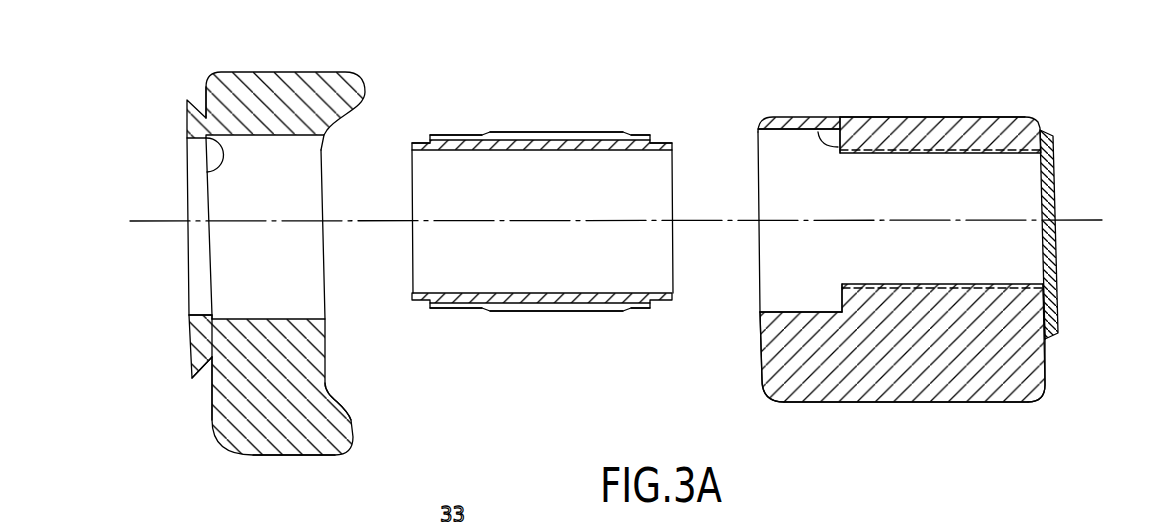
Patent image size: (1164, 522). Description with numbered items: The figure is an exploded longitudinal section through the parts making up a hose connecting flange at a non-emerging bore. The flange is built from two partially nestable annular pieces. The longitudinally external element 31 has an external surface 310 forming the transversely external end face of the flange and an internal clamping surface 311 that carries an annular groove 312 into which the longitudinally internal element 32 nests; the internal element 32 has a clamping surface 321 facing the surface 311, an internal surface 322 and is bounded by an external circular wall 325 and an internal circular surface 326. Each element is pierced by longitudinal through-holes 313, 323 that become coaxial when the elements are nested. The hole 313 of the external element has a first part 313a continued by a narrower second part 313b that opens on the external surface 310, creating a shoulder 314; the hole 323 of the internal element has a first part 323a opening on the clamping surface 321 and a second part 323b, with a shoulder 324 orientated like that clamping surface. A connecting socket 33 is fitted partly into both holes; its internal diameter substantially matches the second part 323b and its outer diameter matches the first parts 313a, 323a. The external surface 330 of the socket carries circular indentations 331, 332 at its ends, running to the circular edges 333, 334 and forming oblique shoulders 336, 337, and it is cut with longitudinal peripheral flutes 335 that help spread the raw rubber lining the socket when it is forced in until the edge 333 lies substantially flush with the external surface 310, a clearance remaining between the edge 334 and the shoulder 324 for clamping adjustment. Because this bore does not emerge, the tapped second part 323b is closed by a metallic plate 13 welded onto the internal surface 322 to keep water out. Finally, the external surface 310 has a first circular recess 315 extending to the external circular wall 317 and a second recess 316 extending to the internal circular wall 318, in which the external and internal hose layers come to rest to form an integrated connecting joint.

The longitudinally external element 31 is at (255, 265).
The external surface 310 is at (192, 338).
The internal clamping surface 311 is at (335, 346).
The annular groove 312 is at (328, 381).
The longitudinal through-holes 313 is at (180, 205).
The first part 313a is at (293, 319).
The second part 313b is at (199, 313).
The shoulder 314 is at (207, 168).
The first circular recess 315 is at (204, 95).
The second recess 316 is at (212, 391).
The external circular wall 317 is at (253, 72).
The internal circular wall 318 is at (286, 479).
The connecting socket 33 is at (542, 207).
The external surface 330 is at (487, 133).
The circular indentation 331 is at (428, 136).
The circular indentation 332 is at (648, 136).
The circular edge 333 is at (413, 145).
The circular edge 334 is at (674, 144).
The longitudinal peripheral flutes 335 is at (545, 312).
The oblique shoulder 336 is at (429, 309).
The oblique shoulder 337 is at (638, 310).
The longitudinally internal element 32 is at (923, 249).
The clamping surface 321 is at (762, 353).
The internal surface 322 is at (1050, 364).
The longitudinal through-holes 323 is at (750, 196).
The first part 323a is at (786, 312).
The second part 323b is at (1013, 285).
The shoulder 324 is at (818, 133).
The external circular wall 325 is at (977, 117).
The internal circular surface 326 is at (908, 403).
The metallic plate 13 is at (1057, 196).